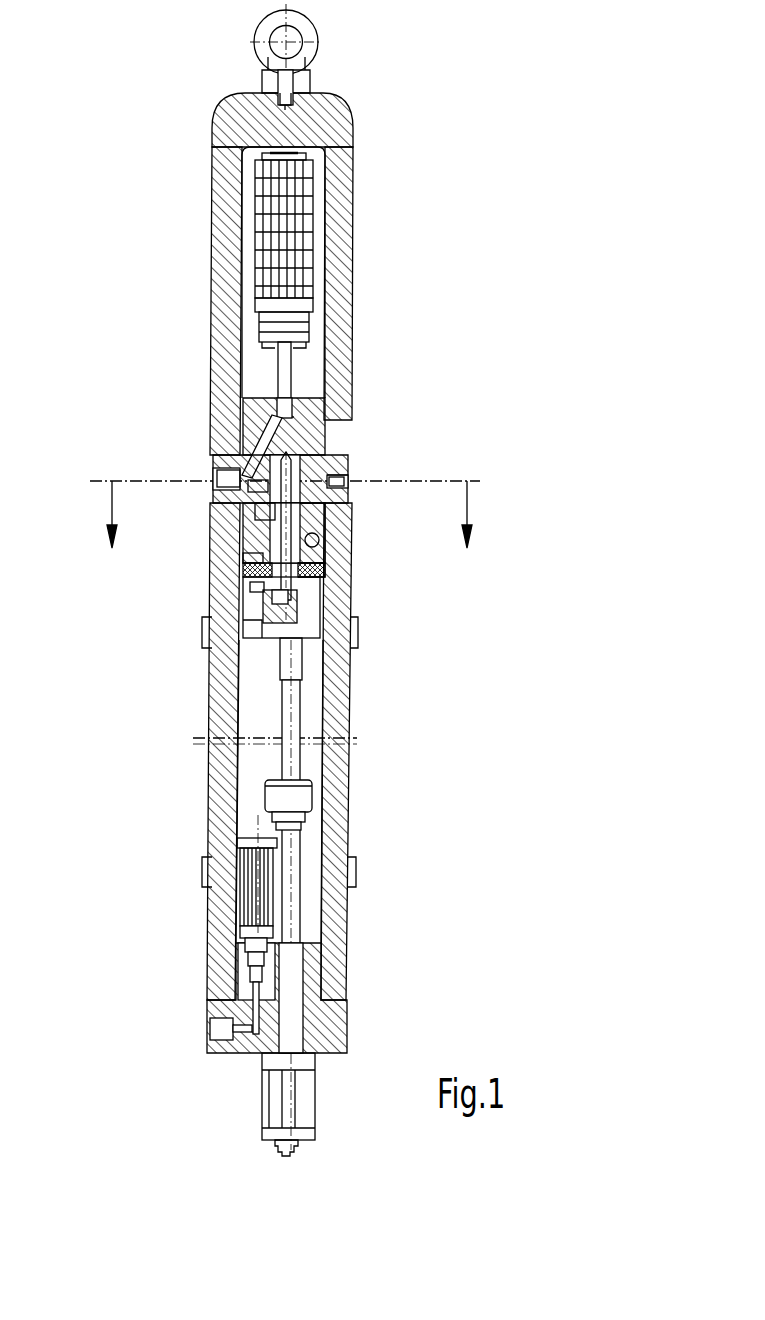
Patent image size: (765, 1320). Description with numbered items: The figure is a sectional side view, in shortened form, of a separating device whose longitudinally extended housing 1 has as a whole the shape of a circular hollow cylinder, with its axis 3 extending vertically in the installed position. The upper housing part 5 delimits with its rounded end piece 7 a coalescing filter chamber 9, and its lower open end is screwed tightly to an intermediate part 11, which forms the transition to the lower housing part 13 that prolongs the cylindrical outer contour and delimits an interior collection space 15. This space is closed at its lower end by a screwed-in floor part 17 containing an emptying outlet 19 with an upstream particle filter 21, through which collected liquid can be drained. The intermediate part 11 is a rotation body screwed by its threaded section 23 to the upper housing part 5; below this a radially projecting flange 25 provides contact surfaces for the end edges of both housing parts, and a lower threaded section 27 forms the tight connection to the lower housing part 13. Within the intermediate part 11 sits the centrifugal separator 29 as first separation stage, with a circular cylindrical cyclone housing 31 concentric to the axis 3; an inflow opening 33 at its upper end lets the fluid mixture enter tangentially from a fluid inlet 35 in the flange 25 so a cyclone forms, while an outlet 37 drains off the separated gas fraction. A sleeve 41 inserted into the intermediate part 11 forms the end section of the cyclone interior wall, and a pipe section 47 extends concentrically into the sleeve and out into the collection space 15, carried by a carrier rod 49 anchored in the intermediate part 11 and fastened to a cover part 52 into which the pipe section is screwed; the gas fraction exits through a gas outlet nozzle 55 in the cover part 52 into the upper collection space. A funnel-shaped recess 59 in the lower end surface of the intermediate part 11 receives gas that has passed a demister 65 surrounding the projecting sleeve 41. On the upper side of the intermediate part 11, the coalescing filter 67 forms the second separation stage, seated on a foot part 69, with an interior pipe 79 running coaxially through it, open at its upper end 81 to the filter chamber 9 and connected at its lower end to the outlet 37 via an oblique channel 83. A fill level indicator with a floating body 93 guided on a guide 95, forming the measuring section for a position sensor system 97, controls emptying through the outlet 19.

The housing 1 is at (470, 413).
The axis 3 is at (290, 1155).
The upper housing part 5 is at (228, 248).
The rounded end piece 7 is at (240, 117).
The coalescing filter chamber 9 is at (240, 195).
The intermediate part 11 is at (330, 410).
The lower housing part 13 is at (222, 706).
The collection space 15 is at (248, 762).
The floor part 17 is at (330, 1020).
The emptying outlet 19 is at (215, 1030).
The particle filter 21 is at (255, 905).
The threaded section 23 is at (233, 449).
The flange 25 is at (350, 466).
The lower threaded section 27 is at (330, 535).
The centrifugal separator 29 is at (185, 570).
The cyclone housing 31 is at (268, 510).
The inflow opening 33 is at (335, 449).
The fluid inlet 35 is at (343, 484).
The outlet 37 is at (222, 468).
The sleeve 41 is at (324, 563).
The pipe section 47 is at (320, 590).
The carrier rod 49 is at (262, 490).
The cover part 52 is at (300, 625).
The gas outlet nozzle 55 is at (245, 632).
The funnel-shaped recess 59 is at (243, 565).
The demister 65 is at (260, 588).
The coalescing filter 67 is at (313, 237).
The foot part 69 is at (268, 357).
The interior pipe 79 is at (300, 367).
The upper end 81 is at (290, 158).
The oblique channel 83 is at (262, 414).
The floating body 93 is at (304, 792).
The guide 95 is at (300, 915).
The position sensor system 97 is at (312, 1093).